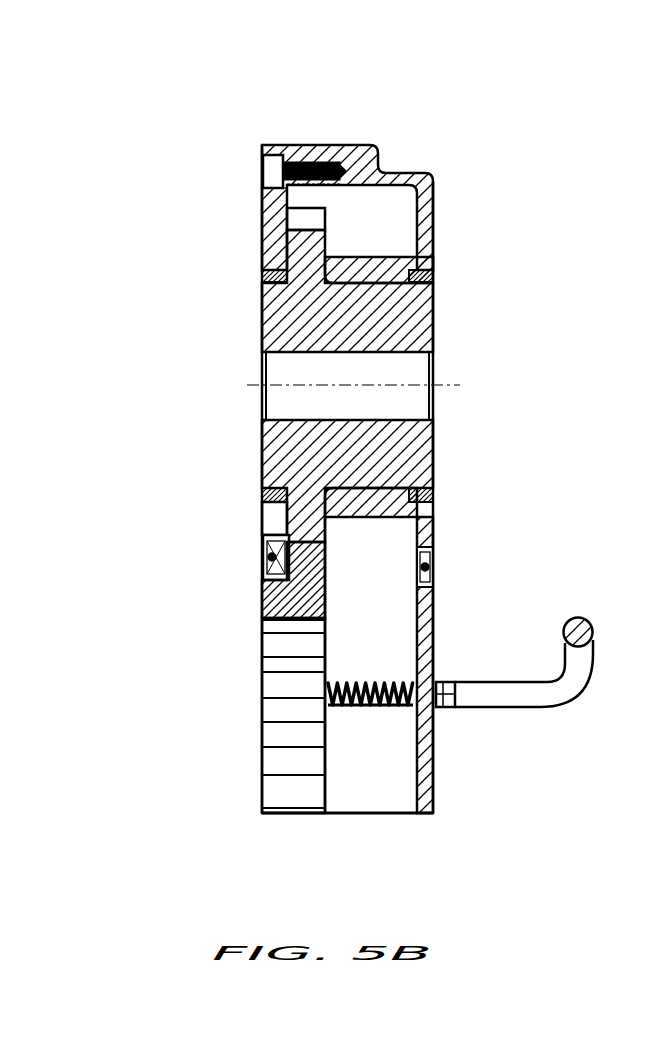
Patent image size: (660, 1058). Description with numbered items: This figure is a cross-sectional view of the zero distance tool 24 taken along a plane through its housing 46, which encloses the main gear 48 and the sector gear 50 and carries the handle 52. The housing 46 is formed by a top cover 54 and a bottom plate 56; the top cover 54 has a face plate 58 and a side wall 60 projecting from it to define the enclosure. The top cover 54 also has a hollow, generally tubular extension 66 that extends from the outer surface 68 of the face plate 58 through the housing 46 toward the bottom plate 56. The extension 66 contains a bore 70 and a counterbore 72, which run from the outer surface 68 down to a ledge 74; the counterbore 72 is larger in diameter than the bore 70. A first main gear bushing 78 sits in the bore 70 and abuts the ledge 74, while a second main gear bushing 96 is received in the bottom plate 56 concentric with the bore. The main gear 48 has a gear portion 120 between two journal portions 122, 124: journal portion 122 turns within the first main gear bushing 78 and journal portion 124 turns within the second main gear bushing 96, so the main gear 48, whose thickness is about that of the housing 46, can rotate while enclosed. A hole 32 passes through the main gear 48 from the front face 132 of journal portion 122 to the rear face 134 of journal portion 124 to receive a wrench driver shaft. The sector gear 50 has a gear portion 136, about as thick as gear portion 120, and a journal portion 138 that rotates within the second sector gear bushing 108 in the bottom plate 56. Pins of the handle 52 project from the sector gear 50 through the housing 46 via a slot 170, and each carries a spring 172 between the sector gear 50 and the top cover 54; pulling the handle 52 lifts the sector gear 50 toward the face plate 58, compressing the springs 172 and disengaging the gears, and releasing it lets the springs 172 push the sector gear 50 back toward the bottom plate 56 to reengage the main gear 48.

The zero distance tool 24 is at (212, 126).
The hole 32 is at (362, 383).
The housing 46 is at (371, 130).
The main gear 48 is at (318, 328).
The sector gear 50 is at (280, 647).
The handle 52 is at (518, 698).
The top cover 54 is at (428, 168).
The bottom plate 56 is at (262, 197).
The face plate 58 is at (435, 196).
The side wall 60 is at (318, 146).
The tubular extension 66 is at (363, 257).
The outer surface 68 is at (437, 230).
The bore 70 is at (435, 307).
The counterbore 72 is at (435, 246).
The ledge 74 is at (437, 288).
The first main gear bushing 78 is at (433, 275).
The second main gear bushing 96 is at (263, 274).
The second sector gear bushing 108 is at (263, 576).
The gear portion 120 is at (303, 520).
The journal portion 122 is at (417, 452).
The journal portion 124 is at (263, 447).
The front face 132 is at (437, 333).
The rear face 134 is at (263, 308).
The gear portion 136 is at (312, 558).
The journal portion 138 is at (263, 600).
The slot 170 is at (370, 683).
The spring 172 is at (382, 706).